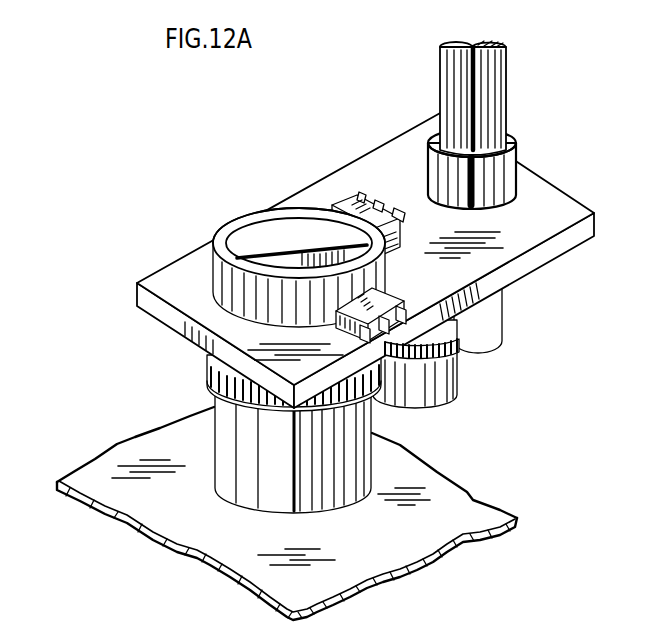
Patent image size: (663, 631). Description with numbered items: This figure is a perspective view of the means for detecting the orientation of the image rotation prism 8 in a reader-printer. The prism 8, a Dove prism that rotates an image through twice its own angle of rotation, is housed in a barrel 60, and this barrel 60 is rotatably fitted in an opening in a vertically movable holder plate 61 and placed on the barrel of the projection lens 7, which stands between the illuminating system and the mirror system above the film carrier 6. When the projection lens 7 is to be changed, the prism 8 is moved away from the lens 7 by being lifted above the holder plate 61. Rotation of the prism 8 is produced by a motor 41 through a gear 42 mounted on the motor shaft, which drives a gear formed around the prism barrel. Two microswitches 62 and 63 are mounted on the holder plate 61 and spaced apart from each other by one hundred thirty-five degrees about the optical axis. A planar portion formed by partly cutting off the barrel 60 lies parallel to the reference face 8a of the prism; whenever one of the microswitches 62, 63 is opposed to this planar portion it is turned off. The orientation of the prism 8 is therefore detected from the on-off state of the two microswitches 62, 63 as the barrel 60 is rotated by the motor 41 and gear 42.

The carrier 6 is at (462, 502).
The projection lens 7 is at (225, 442).
The image rotation prism 8 is at (265, 263).
The reference face of the prism 8a is at (277, 250).
The motor 41 is at (460, 383).
The gear 42 is at (462, 337).
The barrel 60 is at (213, 271).
The holder plate 61 is at (368, 157).
The microswitch 62 is at (377, 204).
The microswitch 63 is at (388, 291).